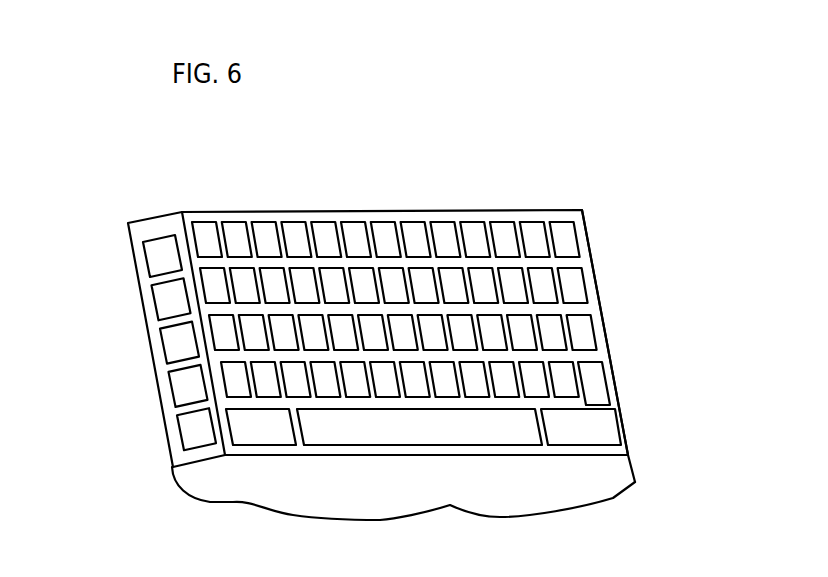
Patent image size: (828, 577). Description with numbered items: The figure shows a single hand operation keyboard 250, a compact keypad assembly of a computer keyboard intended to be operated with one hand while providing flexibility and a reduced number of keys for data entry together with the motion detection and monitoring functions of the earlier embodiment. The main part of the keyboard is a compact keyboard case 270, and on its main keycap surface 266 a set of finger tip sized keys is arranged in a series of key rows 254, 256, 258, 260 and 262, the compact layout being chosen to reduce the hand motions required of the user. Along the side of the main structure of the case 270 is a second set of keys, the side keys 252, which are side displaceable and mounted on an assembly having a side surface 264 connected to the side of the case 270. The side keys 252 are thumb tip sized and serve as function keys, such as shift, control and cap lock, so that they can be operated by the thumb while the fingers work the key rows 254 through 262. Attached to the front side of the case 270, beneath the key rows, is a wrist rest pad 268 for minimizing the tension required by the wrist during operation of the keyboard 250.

The single hand operation keyboard 250 is at (173, 180).
The side keys 252 is at (147, 237).
The key row 254 is at (575, 242).
The key row 256 is at (577, 280).
The key row 258 is at (590, 325).
The key row 260 is at (598, 378).
The key row 262 is at (533, 428).
The side surface 264 is at (148, 320).
The main keycap surface 266 is at (227, 452).
The wrist rest pad 268 is at (370, 520).
The keyboard case 270 is at (624, 430).